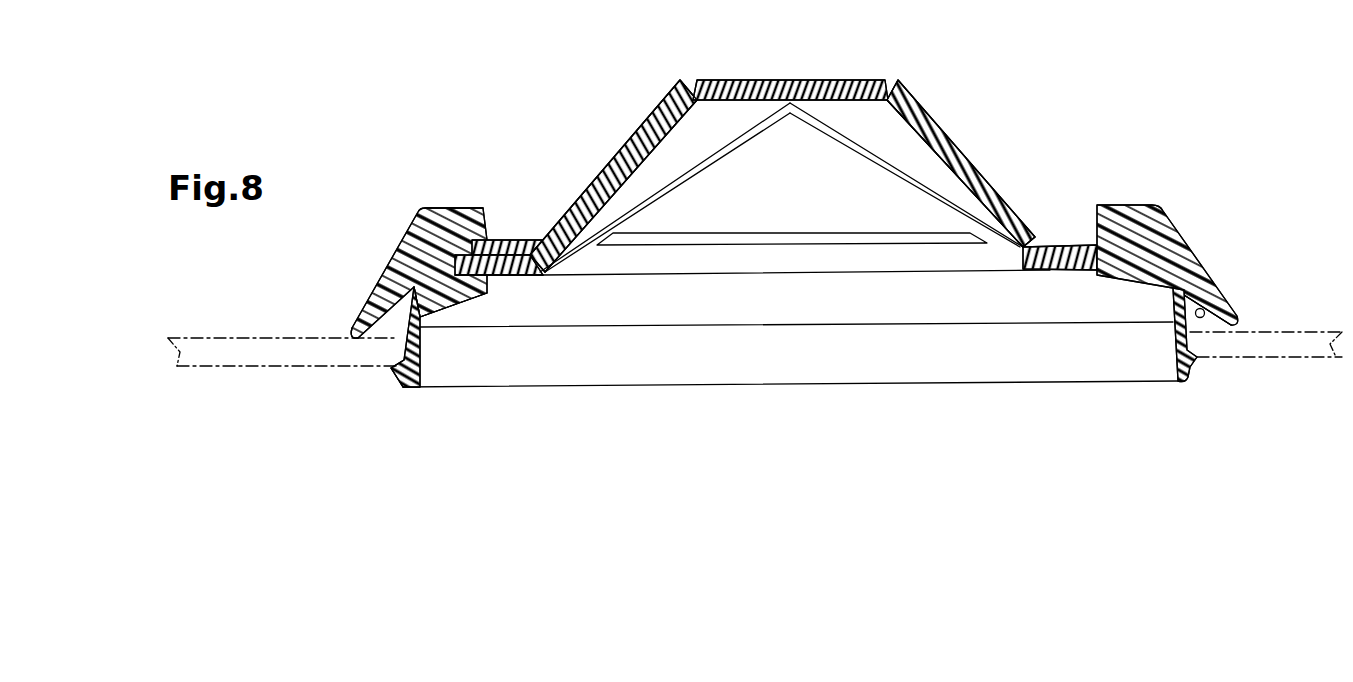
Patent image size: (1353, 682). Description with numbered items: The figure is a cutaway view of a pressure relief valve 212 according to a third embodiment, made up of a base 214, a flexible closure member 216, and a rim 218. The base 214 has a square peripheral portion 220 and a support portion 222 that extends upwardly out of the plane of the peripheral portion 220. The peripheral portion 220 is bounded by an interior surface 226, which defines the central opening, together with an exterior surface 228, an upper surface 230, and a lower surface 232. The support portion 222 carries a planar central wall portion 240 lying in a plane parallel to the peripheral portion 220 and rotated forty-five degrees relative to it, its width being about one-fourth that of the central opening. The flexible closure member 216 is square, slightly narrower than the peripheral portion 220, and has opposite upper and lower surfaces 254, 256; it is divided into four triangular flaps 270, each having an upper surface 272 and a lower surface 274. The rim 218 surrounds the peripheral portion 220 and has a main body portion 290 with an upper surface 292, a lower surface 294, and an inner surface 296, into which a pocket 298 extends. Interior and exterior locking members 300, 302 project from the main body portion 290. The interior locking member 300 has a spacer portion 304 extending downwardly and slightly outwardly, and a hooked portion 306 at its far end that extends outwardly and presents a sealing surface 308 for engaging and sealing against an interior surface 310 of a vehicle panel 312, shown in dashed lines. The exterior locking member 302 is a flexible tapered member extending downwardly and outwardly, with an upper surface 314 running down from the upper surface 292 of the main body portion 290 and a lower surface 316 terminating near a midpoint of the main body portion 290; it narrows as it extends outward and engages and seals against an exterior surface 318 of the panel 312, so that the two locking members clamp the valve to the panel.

The pressure relief valve 212 is at (1150, 121).
The base 214 is at (1021, 252).
The flexible closure member 216 is at (1012, 189).
The rim 218 is at (412, 220).
The peripheral portion 220 is at (1160, 210).
The support portion 222 is at (833, 80).
The interior surface 226 is at (537, 277).
The exterior surface 228 is at (425, 270).
The upper surface 230 is at (512, 256).
The lower surface 232 is at (515, 278).
The central wall portion 240 is at (764, 80).
The upper surface 254 is at (619, 110).
The lower surface 256 is at (618, 228).
The flap 270 is at (666, 98).
The upper surface 272 is at (978, 165).
The lower surface 274 is at (957, 153).
The main body portion 290 is at (1157, 262).
The upper surface 292 is at (467, 207).
The lower surface 294 is at (451, 303).
The inner surface 296 is at (476, 244).
The pocket 298 is at (1093, 270).
The interior locking member 300 is at (1187, 344).
The exterior locking member 302 is at (1215, 276).
The spacer portion 304 is at (362, 347).
The hooked portion 306 is at (390, 377).
The sealing surface 308 is at (1190, 356).
The interior surface 310 is at (268, 368).
The panel 312 is at (224, 358).
The upper surface 314 is at (402, 288).
The lower surface 316 is at (1205, 314).
The exterior surface 318 is at (240, 340).